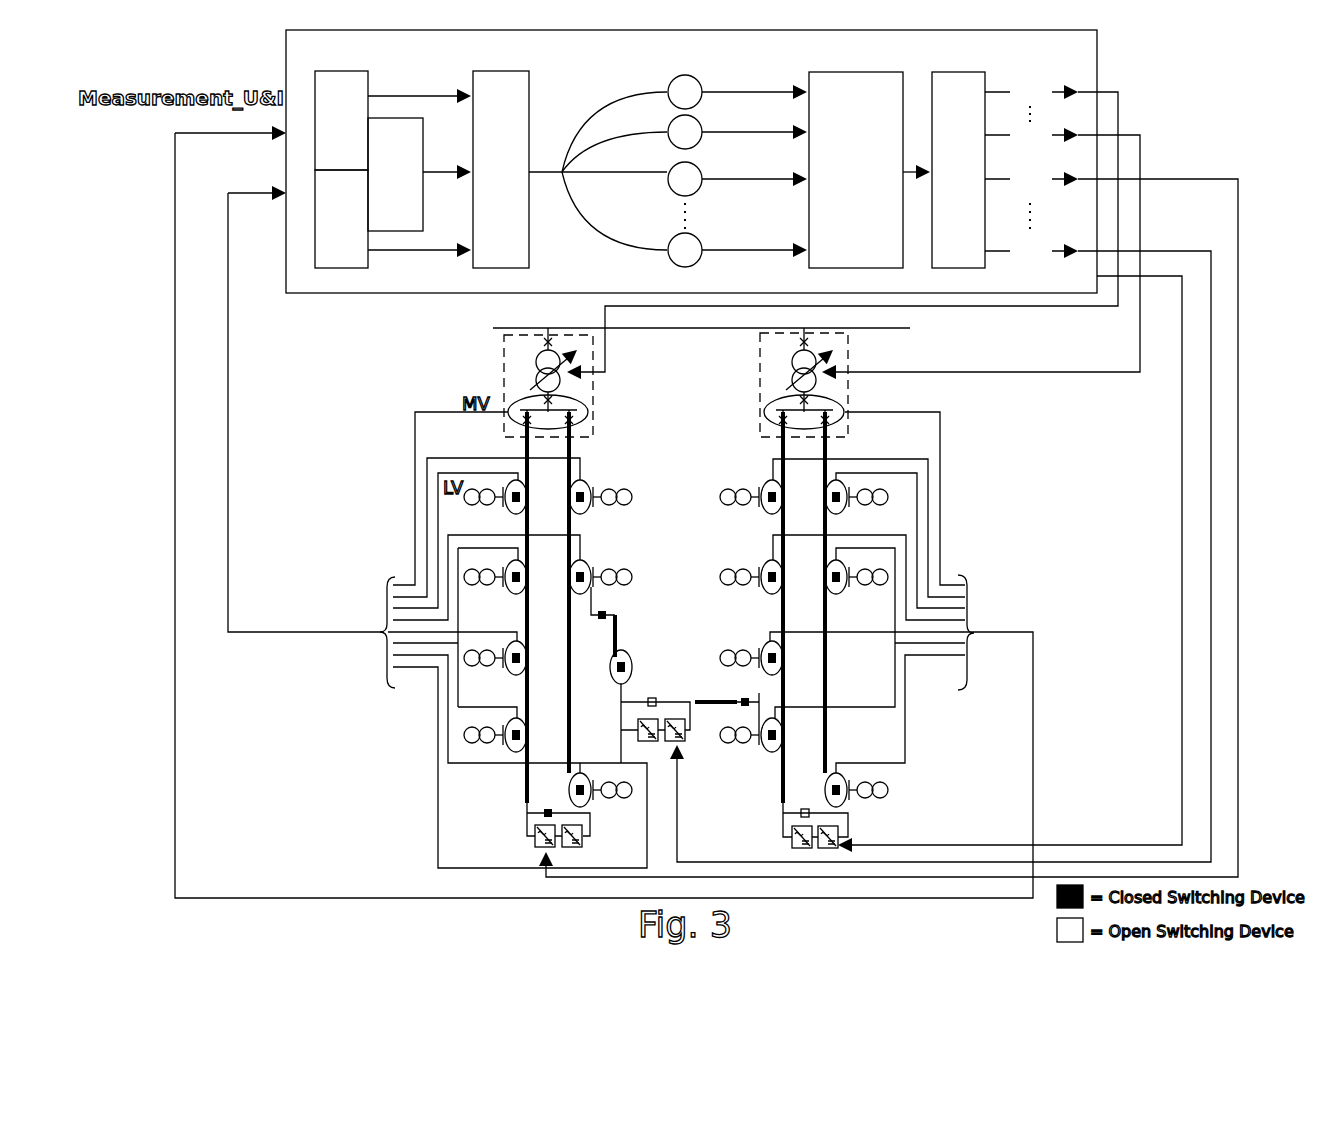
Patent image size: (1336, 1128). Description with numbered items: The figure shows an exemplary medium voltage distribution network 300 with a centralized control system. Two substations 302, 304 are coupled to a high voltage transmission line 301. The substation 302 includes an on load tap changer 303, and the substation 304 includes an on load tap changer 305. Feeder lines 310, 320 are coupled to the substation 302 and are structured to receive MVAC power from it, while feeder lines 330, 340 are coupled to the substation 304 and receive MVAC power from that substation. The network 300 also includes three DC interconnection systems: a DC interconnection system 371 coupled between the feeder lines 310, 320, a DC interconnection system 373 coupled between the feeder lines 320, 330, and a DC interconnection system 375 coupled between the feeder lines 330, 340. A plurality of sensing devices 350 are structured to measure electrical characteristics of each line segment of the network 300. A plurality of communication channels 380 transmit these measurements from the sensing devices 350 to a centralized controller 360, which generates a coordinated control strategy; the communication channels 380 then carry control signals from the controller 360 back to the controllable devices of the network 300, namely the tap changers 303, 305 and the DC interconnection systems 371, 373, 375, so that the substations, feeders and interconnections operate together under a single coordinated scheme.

The medium voltage distribution network 300 is at (1232, 147).
The high voltage transmission line 301 is at (686, 336).
The substation 302 is at (594, 342).
The on load tap changer 303 is at (536, 365).
The substation 304 is at (848, 342).
The on load tap changer 305 is at (792, 368).
The feeder line 310 is at (522, 443).
The feeder line 320 is at (573, 443).
The feeder line 330 is at (776, 443).
The feeder line 340 is at (829, 443).
The sensing devices 350 is at (398, 698).
The centralized controller 360 is at (287, 38).
The DC interconnection system 371 is at (535, 840).
The DC interconnection system 373 is at (685, 742).
The DC interconnection system 375 is at (790, 840).
The communication channels 380 is at (290, 645).